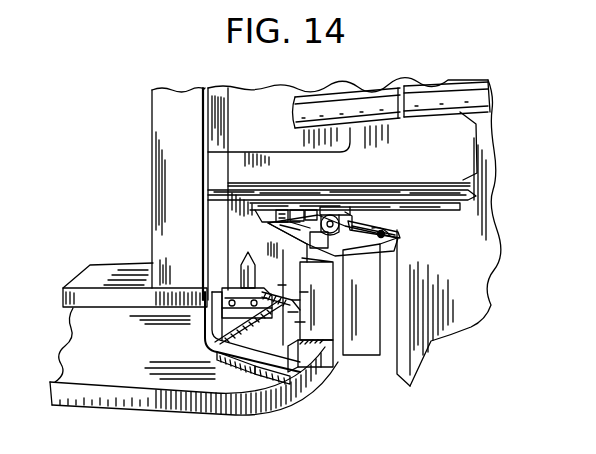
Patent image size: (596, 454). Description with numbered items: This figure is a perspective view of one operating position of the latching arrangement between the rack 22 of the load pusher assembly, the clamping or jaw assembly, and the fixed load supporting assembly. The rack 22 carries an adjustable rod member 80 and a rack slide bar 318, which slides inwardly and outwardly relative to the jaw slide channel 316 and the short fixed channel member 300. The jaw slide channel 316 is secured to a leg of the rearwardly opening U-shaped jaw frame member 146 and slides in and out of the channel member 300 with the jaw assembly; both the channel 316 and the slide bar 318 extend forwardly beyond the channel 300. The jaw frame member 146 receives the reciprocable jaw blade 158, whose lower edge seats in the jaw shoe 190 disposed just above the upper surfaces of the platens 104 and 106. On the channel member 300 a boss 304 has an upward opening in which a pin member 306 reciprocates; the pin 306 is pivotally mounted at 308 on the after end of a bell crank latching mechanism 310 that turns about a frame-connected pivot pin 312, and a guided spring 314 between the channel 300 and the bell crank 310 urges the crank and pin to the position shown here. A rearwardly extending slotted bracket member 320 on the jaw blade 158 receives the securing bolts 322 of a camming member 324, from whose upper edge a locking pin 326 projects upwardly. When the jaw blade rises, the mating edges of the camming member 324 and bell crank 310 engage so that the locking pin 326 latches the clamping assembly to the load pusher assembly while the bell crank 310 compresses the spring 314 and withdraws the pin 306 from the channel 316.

The rack 22 is at (167, 128).
The adjustable rod member 80 is at (306, 101).
The platen 104 is at (88, 279).
The platen 106 is at (72, 343).
The jaw frame member 146 is at (232, 222).
The jaw blade 158 is at (223, 348).
The jaw shoe 190 is at (263, 352).
The channel member 300 is at (470, 198).
The boss 304 is at (382, 209).
The pin member 306 is at (396, 227).
The pivot 308 is at (388, 237).
The bell crank latching mechanism 310 is at (360, 245).
The pivot pin 312 is at (335, 209).
The guided spring 314 is at (292, 219).
The jaw slide channel 316 is at (239, 184).
The rack slide bar 318 is at (457, 148).
The bracket member 320 is at (214, 332).
The securing bolt 322 is at (209, 318).
The camming member 324 is at (302, 374).
The locking pin 326 is at (239, 269).